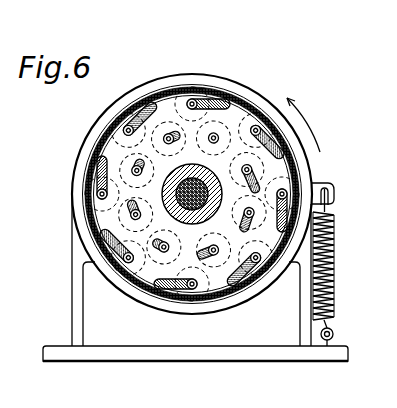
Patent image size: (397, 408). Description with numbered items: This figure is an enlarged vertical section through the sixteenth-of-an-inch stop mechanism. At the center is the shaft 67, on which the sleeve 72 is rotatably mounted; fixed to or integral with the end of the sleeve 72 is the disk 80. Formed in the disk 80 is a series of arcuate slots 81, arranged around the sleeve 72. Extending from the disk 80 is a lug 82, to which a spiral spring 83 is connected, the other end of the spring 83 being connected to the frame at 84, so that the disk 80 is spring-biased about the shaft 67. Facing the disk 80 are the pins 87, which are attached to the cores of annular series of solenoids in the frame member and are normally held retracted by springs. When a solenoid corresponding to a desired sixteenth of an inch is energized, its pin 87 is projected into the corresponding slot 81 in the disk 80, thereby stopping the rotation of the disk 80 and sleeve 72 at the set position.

The shaft 67 is at (166, 202).
The sleeve 72 is at (180, 213).
The disk 80 is at (73, 190).
The arcuate slots 81 is at (186, 104).
The lug 82 is at (320, 183).
The spiral spring 83 is at (331, 250).
The frame connection point 84 is at (334, 334).
The pins 87 is at (129, 167).